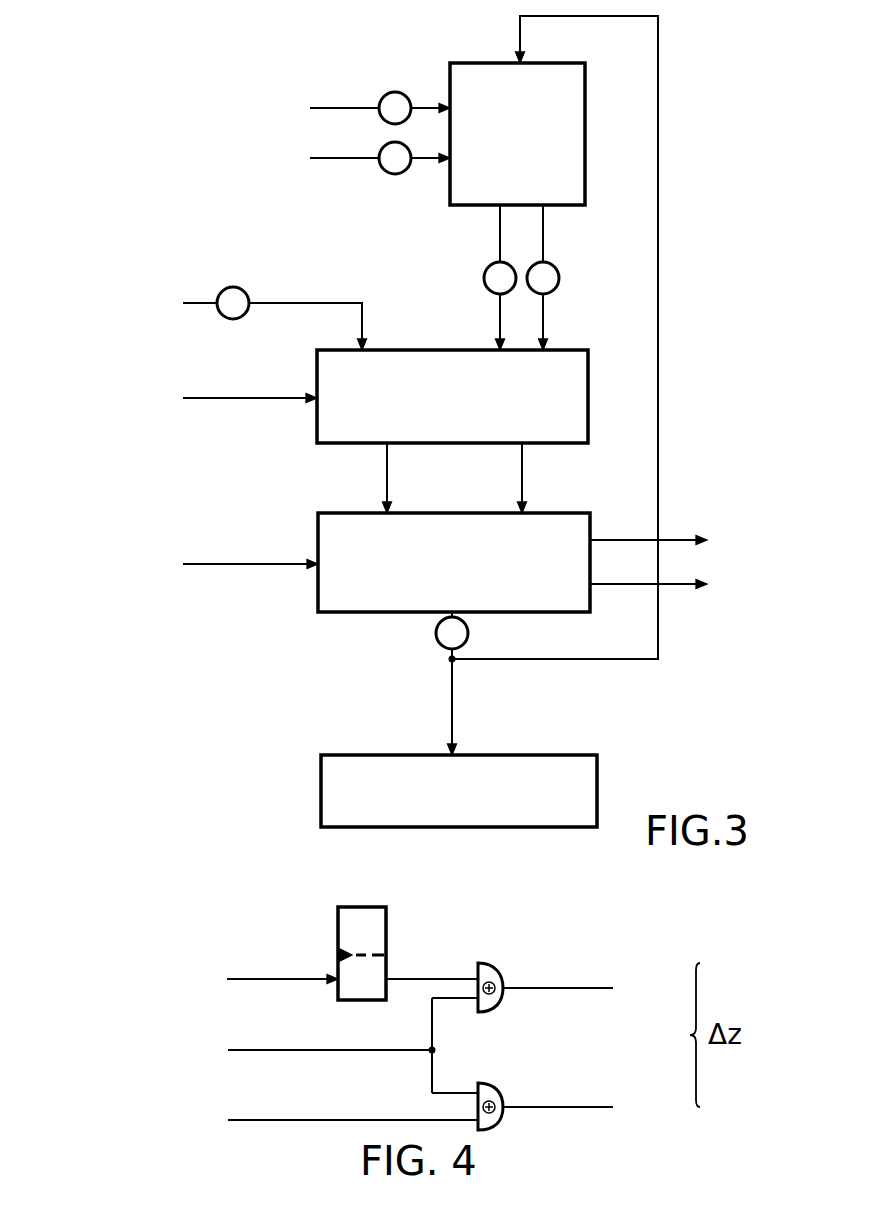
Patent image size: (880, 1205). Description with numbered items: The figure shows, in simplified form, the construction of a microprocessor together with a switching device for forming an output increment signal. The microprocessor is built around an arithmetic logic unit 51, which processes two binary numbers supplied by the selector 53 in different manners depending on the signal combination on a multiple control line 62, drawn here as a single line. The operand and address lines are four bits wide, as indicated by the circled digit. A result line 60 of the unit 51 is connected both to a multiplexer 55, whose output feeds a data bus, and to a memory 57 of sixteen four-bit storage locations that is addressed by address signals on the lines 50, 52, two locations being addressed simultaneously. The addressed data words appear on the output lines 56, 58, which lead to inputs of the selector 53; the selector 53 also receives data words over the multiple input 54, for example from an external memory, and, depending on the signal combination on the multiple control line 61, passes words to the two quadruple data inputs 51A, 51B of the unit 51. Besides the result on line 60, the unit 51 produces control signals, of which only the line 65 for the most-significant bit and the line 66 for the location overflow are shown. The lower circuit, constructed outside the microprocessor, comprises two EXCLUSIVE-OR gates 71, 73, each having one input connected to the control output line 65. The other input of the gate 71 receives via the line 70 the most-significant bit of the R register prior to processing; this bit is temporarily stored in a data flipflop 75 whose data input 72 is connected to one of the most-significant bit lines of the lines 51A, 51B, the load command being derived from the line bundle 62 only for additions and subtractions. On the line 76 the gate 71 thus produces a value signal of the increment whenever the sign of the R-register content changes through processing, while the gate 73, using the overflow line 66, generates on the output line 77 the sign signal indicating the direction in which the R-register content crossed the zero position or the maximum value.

In FIG. 3, the address line 50 is at (347, 108).
In FIG. 3, the address line 52 is at (347, 160).
In FIG. 3, the memory 57 is at (585, 104).
In FIG. 3, the output line 56 is at (500, 245).
In FIG. 3, the output line 58 is at (543, 242).
In FIG. 3, the multiple input 54 is at (307, 303).
In FIG. 3, the selector 53 is at (572, 350).
In FIG. 3, the multiple control line 61 is at (251, 400).
In FIG. 3, the data input 51A is at (387, 475).
In FIG. 3, the data input 51B is at (522, 472).
In FIG. 3, the arithmetic logic unit 51 is at (577, 513).
In FIG. 3, the multiple control line 62 is at (247, 566).
In FIG. 3, the control output line 65 is at (677, 540).
In FIG. 4, the control output line 65 is at (333, 1052).
In FIG. 3, the overflow line 66 is at (689, 586).
In FIG. 4, the overflow line 66 is at (328, 1122).
In FIG. 3, the result line 60 is at (585, 661).
In FIG. 3, the multiplexer 55 is at (597, 791).
In FIG. 4, the data flipflop 75 is at (386, 929).
In FIG. 4, the data input 72 is at (264, 981).
In FIG. 4, the line 70 is at (440, 979).
In FIG. 4, the EXCLUSIVE-OR gate 71 is at (494, 965).
In FIG. 4, the EXCLUSIVE-OR gate 73 is at (495, 1085).
In FIG. 4, the output line 76 is at (561, 990).
In FIG. 4, the output line 77 is at (535, 1109).